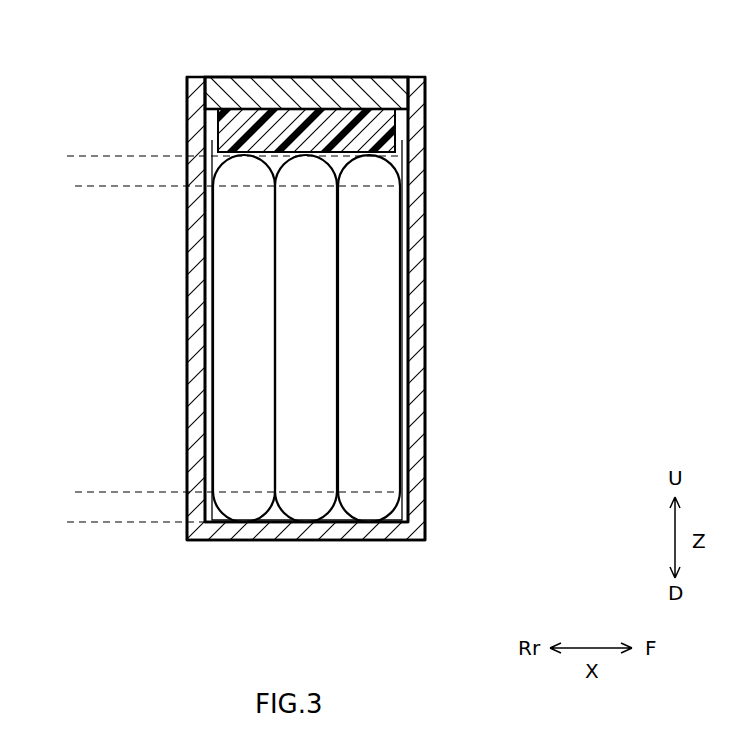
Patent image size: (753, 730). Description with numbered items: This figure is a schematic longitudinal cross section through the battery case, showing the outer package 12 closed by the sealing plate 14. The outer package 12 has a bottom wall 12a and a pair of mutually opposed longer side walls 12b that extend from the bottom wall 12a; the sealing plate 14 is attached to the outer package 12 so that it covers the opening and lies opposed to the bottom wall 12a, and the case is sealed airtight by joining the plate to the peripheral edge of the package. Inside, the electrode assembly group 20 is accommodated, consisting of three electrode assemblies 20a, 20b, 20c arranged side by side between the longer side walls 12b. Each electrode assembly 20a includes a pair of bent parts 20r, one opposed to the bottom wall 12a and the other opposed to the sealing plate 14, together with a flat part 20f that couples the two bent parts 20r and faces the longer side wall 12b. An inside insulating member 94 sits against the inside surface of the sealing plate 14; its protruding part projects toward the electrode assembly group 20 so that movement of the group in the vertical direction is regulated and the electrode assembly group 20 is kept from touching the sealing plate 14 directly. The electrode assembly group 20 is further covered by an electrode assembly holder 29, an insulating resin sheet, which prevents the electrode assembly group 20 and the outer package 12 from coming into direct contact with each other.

The outer package 12 is at (428, 399).
The bottom wall 12a is at (400, 540).
The longer side wall 12b is at (427, 446).
The sealing plate 14 is at (404, 76).
The inside insulating member 94 is at (210, 134).
The electrode assembly holder 29 is at (402, 348).
The electrode assembly group 20 is at (317, 416).
The electrode assembly 20a is at (373, 508).
The electrode assembly 20b is at (315, 508).
The electrode assembly 20c is at (257, 505).
The bent part 20r is at (90, 522).
The flat part 20f is at (90, 186).